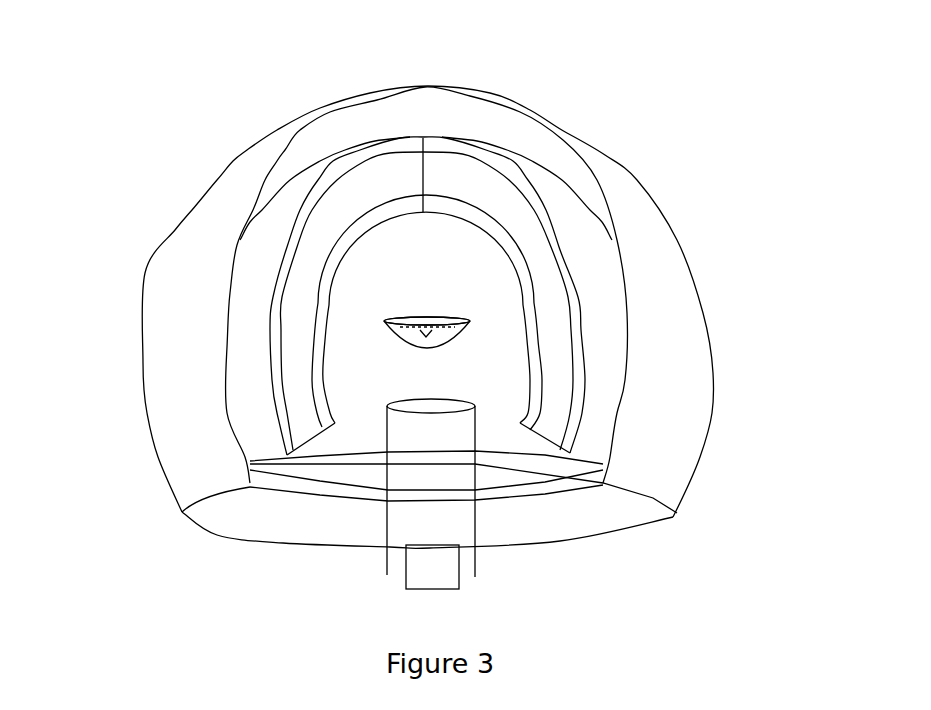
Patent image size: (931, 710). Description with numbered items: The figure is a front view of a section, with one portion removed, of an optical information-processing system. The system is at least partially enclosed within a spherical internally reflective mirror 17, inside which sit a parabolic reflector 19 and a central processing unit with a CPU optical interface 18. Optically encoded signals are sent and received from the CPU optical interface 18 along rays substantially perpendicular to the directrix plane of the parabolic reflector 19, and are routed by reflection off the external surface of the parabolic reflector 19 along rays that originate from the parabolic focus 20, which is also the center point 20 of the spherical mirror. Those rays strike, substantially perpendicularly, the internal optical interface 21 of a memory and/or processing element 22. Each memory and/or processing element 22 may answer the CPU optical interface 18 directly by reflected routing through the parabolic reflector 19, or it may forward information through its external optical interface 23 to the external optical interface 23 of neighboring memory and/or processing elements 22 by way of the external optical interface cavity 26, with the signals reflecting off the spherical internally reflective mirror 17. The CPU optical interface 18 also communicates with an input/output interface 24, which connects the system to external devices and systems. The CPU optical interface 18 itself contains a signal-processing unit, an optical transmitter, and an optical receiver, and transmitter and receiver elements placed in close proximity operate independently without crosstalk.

The spherical internally reflective mirror 17 is at (207, 438).
The CPU optical interface 18 is at (432, 405).
The parabolic reflector 19 is at (385, 320).
The parabolic focus 20 is at (467, 317).
The internal optical interface 21 is at (537, 373).
The memory and/or processing element 22 is at (550, 393).
The external optical interface 23 is at (573, 423).
The input/output interface 24 is at (442, 545).
The external optical interface cavity 26 is at (442, 110).